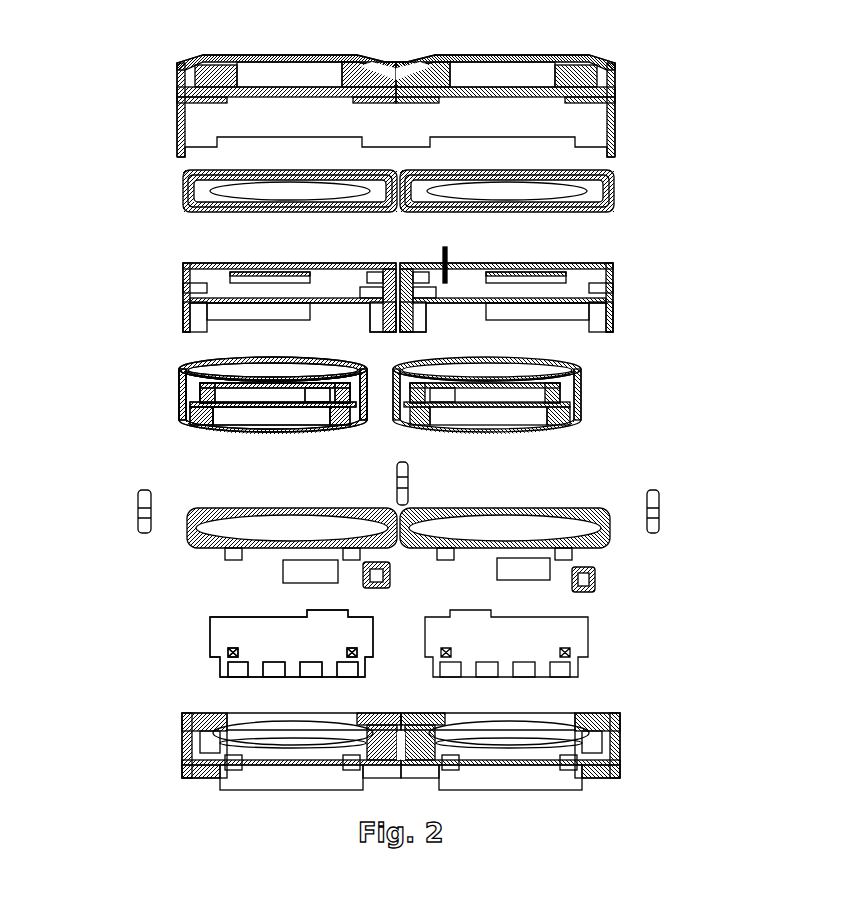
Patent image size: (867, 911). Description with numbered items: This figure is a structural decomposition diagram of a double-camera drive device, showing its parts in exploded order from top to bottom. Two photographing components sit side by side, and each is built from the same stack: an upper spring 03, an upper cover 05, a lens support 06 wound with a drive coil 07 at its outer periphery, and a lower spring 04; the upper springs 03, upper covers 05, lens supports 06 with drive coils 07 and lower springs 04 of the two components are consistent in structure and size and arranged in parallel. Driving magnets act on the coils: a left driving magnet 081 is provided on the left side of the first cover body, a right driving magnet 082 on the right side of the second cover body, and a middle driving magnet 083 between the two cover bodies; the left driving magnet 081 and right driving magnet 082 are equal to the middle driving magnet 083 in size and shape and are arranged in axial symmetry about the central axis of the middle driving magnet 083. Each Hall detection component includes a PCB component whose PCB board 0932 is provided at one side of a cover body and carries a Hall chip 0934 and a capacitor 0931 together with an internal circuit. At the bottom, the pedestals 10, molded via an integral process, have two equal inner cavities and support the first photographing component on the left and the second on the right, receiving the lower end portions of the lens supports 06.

The pedestal 10 is at (248, 118).
The upper spring 03 is at (205, 193).
The upper cover 05 is at (200, 312).
The drive coil 07 is at (235, 408).
The lens support 06 is at (505, 423).
The middle driving magnet 083 is at (400, 473).
The left driving magnet 081 is at (145, 505).
The right driving magnet 082 is at (737, 505).
The lower spring 04 is at (193, 545).
The Hall chip 0934 is at (312, 578).
The capacitor 0931 is at (582, 582).
The PCB board 0932 is at (250, 635).